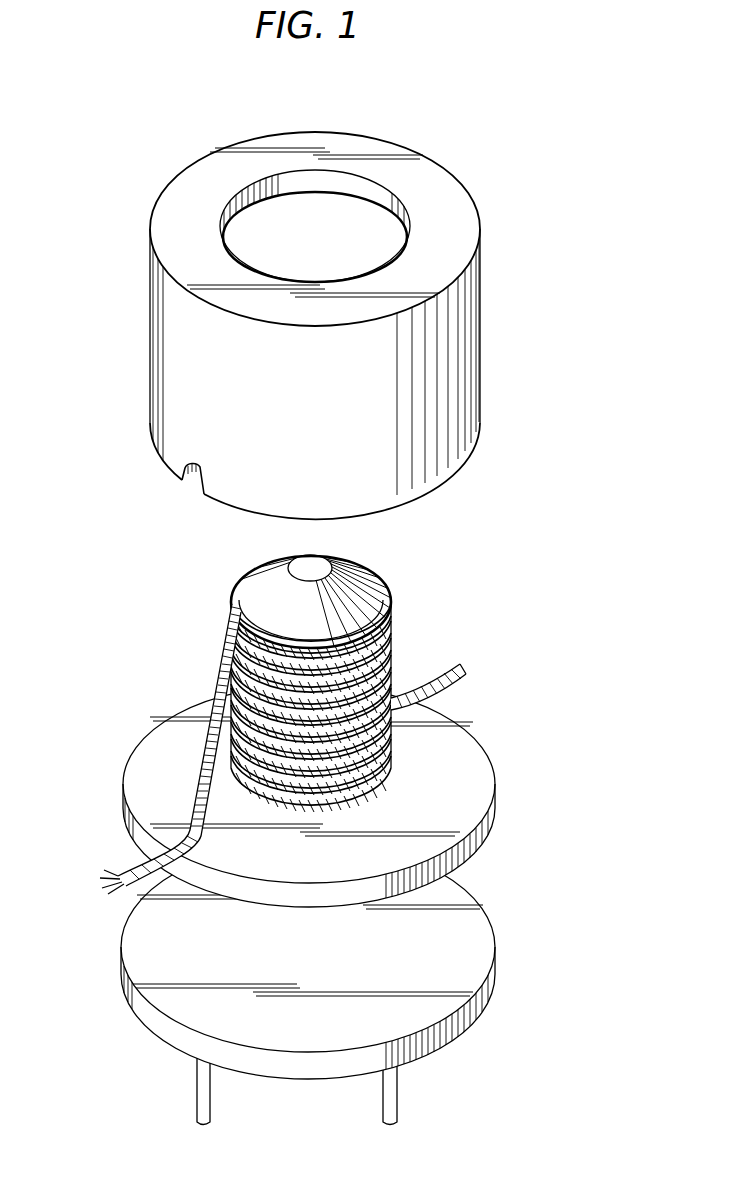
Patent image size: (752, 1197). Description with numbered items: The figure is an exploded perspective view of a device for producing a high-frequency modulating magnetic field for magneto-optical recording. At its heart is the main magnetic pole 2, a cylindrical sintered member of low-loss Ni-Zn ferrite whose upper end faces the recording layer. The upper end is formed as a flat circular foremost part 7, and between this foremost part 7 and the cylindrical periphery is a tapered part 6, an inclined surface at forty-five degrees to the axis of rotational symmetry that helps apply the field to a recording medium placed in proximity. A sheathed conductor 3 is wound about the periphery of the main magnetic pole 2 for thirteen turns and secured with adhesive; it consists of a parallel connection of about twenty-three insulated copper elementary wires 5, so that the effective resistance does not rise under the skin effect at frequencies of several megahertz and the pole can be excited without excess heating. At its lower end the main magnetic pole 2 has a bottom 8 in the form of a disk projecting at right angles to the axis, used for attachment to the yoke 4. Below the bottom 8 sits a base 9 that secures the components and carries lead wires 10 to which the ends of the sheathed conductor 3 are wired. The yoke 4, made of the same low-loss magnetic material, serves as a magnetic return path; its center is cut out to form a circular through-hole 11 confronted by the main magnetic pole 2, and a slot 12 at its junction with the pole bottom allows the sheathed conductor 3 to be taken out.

The main magnetic pole 2 is at (261, 671).
The sheathed conductor 3 is at (389, 630).
The yoke 4 is at (328, 312).
The elementary wires 5 is at (462, 670).
The tapered part 6 is at (368, 587).
The foremost part 7 is at (325, 563).
The bottom 8 is at (484, 766).
The base 9 is at (483, 931).
The lead wire 10 is at (398, 1088).
The circular through-hole 11 is at (368, 192).
The slot 12 is at (190, 479).